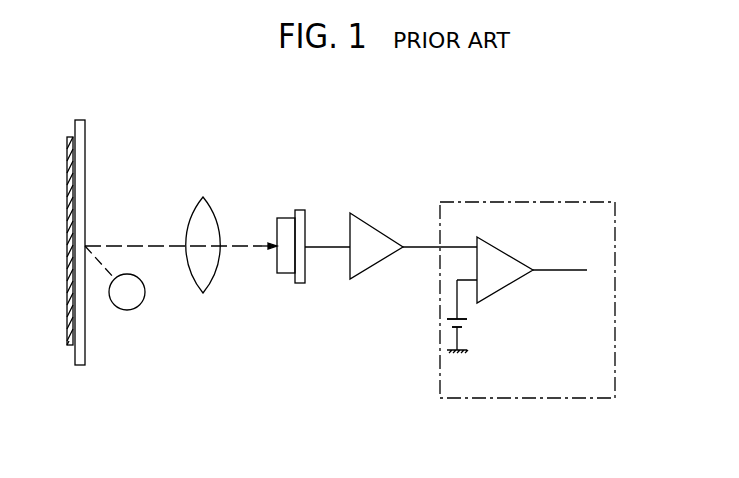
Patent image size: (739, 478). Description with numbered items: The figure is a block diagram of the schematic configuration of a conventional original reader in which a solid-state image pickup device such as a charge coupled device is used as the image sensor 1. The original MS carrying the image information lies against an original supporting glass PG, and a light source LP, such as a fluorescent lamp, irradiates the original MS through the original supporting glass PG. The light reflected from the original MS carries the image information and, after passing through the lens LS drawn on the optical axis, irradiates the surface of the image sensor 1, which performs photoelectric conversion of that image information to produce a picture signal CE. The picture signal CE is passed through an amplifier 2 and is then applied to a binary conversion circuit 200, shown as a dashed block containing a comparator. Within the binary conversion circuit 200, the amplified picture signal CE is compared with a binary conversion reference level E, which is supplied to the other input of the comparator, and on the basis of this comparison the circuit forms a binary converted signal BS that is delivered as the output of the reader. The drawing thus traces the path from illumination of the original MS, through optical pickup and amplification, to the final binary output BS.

The original supporting glass PG is at (85, 148).
The original MS is at (67, 332).
The light source LP is at (130, 311).
The lens LS is at (214, 213).
The image sensor 1 is at (300, 210).
The amplifier 2 is at (367, 222).
The picture signal CE is at (440, 238).
The binary conversion circuit 200 is at (527, 277).
The binary conversion reference level E is at (464, 325).
The binary converted signal BS is at (570, 271).